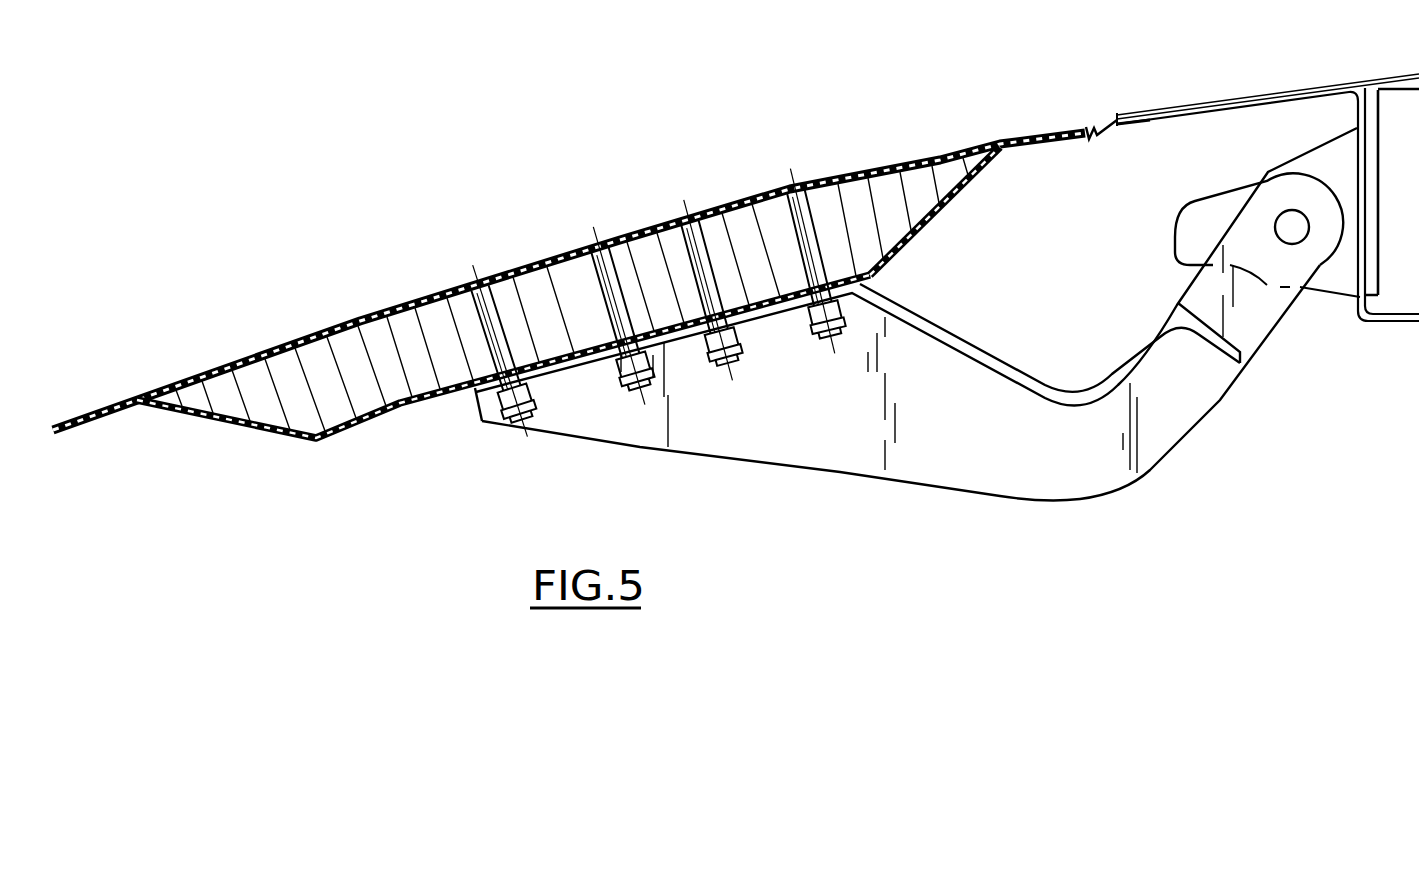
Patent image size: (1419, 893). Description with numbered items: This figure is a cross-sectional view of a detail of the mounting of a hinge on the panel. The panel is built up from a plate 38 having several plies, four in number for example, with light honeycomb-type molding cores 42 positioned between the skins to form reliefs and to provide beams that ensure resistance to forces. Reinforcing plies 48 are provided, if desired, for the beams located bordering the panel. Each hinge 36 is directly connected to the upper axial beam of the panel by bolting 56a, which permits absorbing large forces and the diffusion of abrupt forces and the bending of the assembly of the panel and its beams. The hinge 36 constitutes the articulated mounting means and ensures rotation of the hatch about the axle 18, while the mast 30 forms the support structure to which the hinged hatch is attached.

The plate 38 is at (230, 357).
The molding core 42 is at (373, 337).
The reinforcing ply 48 is at (1000, 132).
The bolting 56a is at (603, 270).
The hinge 36 is at (950, 457).
The mast 30 is at (1318, 167).
The axle 18 is at (1307, 241).